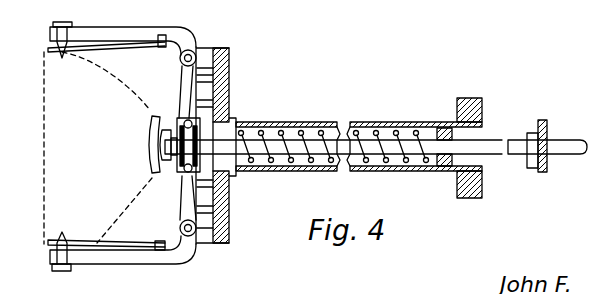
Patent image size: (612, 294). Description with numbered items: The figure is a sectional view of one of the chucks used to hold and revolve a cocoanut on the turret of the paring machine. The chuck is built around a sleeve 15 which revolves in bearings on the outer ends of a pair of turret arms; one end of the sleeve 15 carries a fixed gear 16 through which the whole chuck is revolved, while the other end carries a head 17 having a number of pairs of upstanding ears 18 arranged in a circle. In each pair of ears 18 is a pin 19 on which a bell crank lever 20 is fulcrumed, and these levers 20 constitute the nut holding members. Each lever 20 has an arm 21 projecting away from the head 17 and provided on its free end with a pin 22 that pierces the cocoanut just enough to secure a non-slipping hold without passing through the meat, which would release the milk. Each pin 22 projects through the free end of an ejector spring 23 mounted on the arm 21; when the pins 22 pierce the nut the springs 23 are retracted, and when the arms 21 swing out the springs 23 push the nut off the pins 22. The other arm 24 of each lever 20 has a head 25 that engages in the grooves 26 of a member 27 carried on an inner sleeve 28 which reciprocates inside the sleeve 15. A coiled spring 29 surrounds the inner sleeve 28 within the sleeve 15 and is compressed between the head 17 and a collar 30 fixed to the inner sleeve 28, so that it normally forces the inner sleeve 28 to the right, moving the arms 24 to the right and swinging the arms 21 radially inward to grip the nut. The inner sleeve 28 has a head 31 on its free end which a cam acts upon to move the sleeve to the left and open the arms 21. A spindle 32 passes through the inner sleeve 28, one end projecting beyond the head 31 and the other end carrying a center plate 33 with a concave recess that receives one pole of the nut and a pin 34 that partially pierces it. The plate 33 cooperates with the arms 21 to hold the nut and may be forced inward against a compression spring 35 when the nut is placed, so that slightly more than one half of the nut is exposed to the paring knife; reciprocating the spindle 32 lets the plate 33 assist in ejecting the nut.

The sleeve 15 is at (412, 125).
The fixed gear 16 is at (478, 101).
The head 17 is at (232, 79).
The upstanding ears 18 is at (222, 51).
The pin 19 is at (193, 50).
The bell crank lever 20 is at (186, 27).
The arm 21 is at (106, 28).
The pin 22 is at (62, 236).
The ejector spring 23 is at (88, 52).
The arm 24 is at (183, 205).
The head 25 is at (183, 117).
The grooves 26 is at (229, 118).
The member 27 is at (163, 122).
The inner sleeve 28 is at (345, 130).
The coiled spring 29 is at (380, 122).
The collar 30 is at (455, 134).
The head 31 is at (541, 122).
The spindle 32 is at (565, 155).
The center plate 33 is at (150, 177).
The pin 34 is at (162, 147).
The compression spring 35 is at (150, 128).